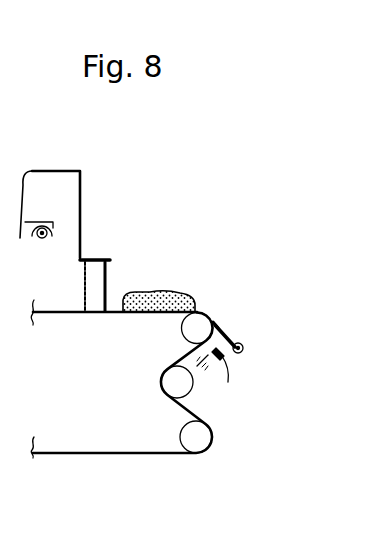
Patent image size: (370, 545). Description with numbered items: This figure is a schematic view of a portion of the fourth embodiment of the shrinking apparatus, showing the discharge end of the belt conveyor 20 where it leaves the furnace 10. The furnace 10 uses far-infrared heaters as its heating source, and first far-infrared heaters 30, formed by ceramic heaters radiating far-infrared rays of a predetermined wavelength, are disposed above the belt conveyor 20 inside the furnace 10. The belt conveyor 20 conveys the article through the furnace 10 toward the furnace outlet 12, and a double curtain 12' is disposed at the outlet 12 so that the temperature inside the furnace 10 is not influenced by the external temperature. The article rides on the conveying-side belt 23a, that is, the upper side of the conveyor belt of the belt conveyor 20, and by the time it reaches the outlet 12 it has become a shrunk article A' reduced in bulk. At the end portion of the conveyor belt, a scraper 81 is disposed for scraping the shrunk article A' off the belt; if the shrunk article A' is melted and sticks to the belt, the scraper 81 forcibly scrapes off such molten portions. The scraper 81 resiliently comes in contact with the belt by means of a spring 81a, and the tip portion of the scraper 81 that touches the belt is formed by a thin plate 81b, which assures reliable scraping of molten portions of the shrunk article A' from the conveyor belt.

The furnace 10 is at (84, 168).
The first far-infrared heaters 30 is at (38, 242).
The furnace outlet 12 is at (124, 269).
The double curtain 12' is at (117, 251).
The shrunk article A' is at (173, 278).
The conveying-side belt 23a is at (61, 312).
The belt conveyor 20 is at (100, 457).
The scraper 81 is at (243, 346).
The thin plate 81b is at (217, 324).
The spring 81a is at (226, 358).